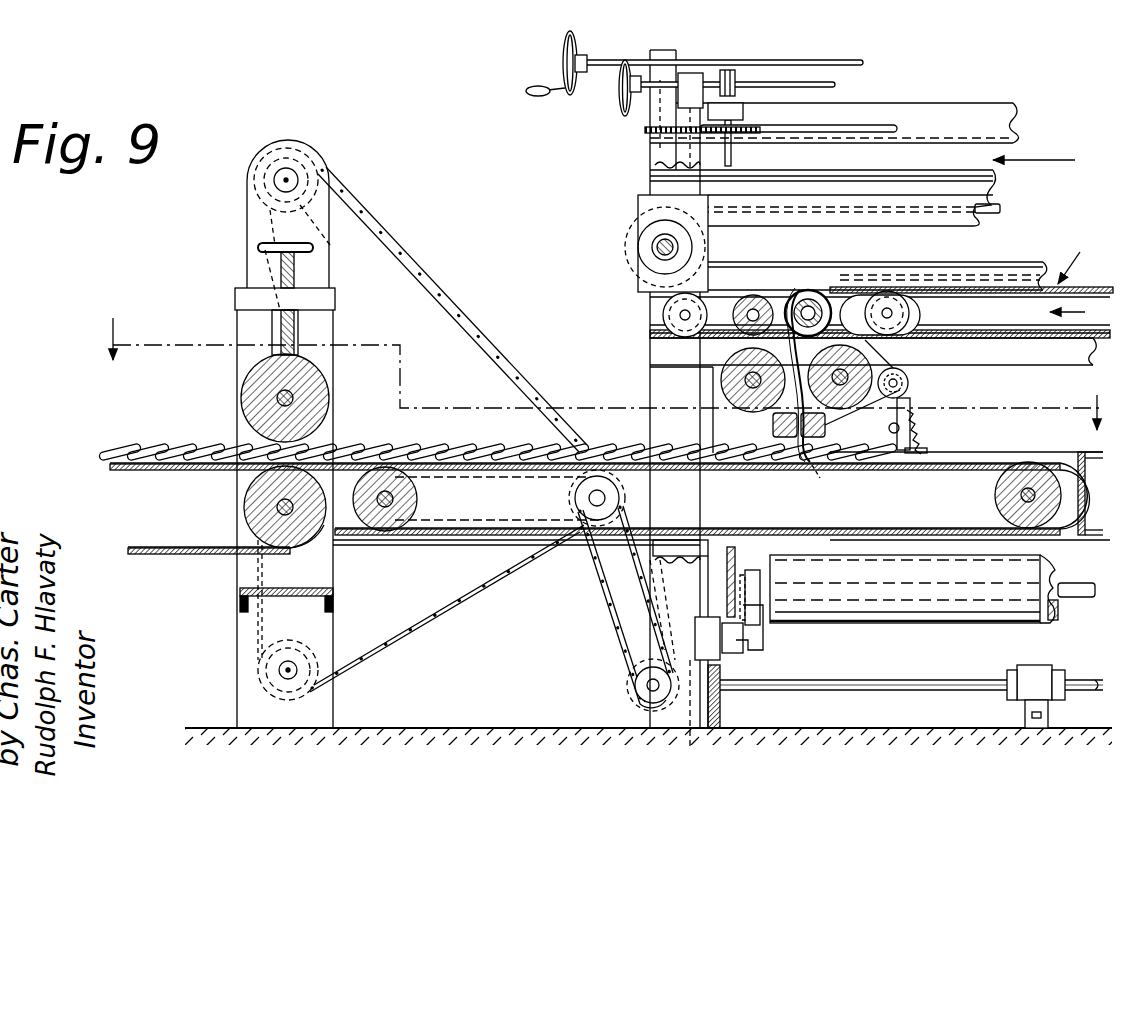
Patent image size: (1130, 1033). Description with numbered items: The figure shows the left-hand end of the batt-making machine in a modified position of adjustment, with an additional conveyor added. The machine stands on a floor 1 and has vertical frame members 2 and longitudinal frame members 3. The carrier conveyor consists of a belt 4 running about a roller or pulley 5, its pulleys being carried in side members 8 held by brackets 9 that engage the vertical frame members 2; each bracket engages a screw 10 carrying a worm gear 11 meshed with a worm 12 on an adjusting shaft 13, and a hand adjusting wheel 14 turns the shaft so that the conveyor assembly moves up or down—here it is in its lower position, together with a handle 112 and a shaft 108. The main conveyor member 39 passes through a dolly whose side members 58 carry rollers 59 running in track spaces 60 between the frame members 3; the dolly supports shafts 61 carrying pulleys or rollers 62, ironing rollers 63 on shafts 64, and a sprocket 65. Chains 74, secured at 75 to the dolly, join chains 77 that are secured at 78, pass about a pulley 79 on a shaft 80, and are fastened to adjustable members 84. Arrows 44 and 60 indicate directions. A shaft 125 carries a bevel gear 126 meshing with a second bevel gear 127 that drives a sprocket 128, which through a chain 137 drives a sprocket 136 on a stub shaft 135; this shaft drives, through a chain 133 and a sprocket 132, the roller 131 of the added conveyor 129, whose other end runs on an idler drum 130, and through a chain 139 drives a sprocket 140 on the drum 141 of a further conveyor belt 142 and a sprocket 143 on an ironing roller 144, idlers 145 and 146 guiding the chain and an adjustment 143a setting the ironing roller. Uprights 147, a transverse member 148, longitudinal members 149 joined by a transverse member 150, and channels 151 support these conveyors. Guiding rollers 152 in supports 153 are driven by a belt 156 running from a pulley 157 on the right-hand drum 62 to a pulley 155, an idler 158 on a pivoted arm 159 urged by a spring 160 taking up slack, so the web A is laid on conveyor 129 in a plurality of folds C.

The foundation or floor 1 is at (470, 728).
The vertical frame member 2 is at (655, 155).
The longitudinal frame member 3 is at (937, 122).
The belt or conveyor 4 is at (1048, 622).
The roller or pulley 5 is at (945, 625).
The side member 8 is at (760, 650).
The bracket 9 is at (700, 625).
The screw 10 is at (742, 556).
The worm gear 11 is at (738, 100).
The worm 12 is at (728, 68).
The control or adjusting shaft 13 is at (835, 85).
The hand adjusting wheel 14 is at (620, 100).
The conveyor member 39 is at (985, 331).
The direction arrow 44 is at (1034, 161).
The dolly side member 58 is at (680, 338).
The roller 59 is at (662, 316).
The track space 60 is at (1082, 312).
The shaft 61 is at (812, 300).
The pulley or roller 62 is at (735, 330).
The ironing roller 63 is at (722, 380).
The shaft 64 is at (753, 380).
The sprocket 65 is at (809, 351).
The chain 74 is at (1103, 285).
The securing point 75 is at (868, 292).
The second chain 77 is at (998, 206).
The securing point 78 is at (740, 292).
The sprocket or pulley 79 is at (640, 250).
The shaft 80 is at (660, 252).
The adjustable member 84 is at (840, 132).
The shaft 108 is at (812, 60).
The hand wheel 112 is at (565, 54).
The shaft 125 is at (846, 680).
The bevel gear 126 is at (693, 721).
The second bevel gear 127 is at (635, 693).
The sprocket 128 is at (648, 665).
The added conveyor 129 is at (952, 470).
The idler drum or roller 130 is at (1010, 507).
The second roller 131 is at (395, 531).
The sprocket 132 is at (400, 498).
The chain 133 is at (478, 530).
The stub shaft 135 is at (590, 498).
The sprocket 136 is at (608, 522).
The chain 137 is at (605, 612).
The chain 139 is at (448, 298).
The sprocket 140 is at (248, 497).
The drum or roller 141 is at (285, 507).
The belt 142 is at (140, 470).
The sprocket 143 is at (250, 393).
The adjustment 143a is at (294, 270).
The ironing roller 144 is at (285, 398).
The idler sprocket or pulley 145 is at (312, 229).
The idler sprocket or pulley 146 is at (305, 640).
The upright 147 is at (237, 643).
The transverse member 148 is at (240, 602).
The longitudinal frame member 149 is at (362, 548).
The transverse member 150 is at (1078, 458).
The channel 151 is at (700, 560).
The guiding roller 152 is at (773, 425).
The support 153 is at (825, 475).
The pulley 155 is at (815, 470).
The belt 156 is at (880, 352).
The pulley 157 is at (800, 292).
The idler 158 is at (908, 382).
The pivoted arm 159 is at (905, 405).
The spring 160 is at (925, 437).
The web A is at (1070, 257).
The folds C is at (366, 450).